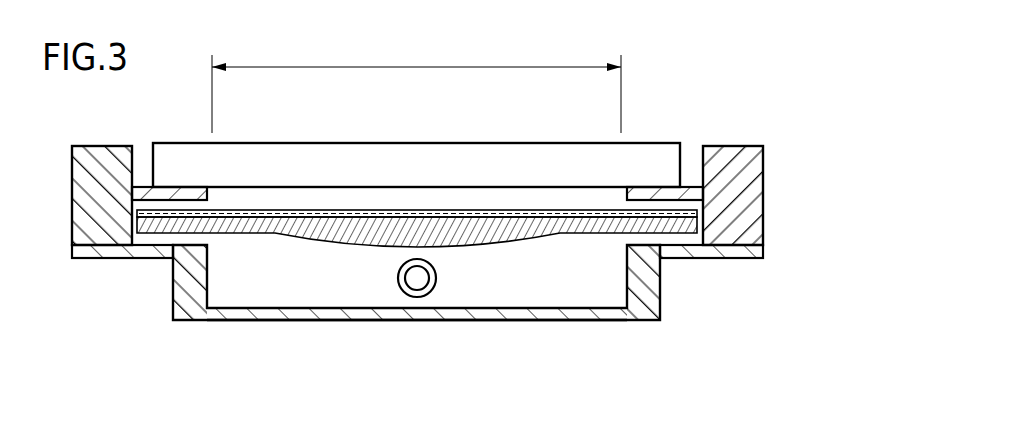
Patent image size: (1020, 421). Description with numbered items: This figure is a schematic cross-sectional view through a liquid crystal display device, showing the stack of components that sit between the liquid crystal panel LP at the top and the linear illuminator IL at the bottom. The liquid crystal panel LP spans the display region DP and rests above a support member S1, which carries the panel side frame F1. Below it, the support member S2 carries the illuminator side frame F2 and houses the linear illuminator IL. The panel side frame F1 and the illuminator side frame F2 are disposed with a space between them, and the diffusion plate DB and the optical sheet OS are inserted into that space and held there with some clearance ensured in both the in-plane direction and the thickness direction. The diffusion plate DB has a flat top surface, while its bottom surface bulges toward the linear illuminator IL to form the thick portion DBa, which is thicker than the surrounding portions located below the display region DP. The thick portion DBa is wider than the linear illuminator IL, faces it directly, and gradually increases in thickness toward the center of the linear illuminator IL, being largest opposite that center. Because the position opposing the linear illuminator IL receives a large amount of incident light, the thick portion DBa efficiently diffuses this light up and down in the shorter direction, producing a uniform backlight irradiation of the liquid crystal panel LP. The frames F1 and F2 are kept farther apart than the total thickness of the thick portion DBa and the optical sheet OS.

The liquid crystal panel LP is at (655, 153).
The display region DP is at (416, 88).
The support member S1 is at (101, 146).
The panel side frame F1 is at (166, 193).
The illuminator side frame F2 is at (203, 255).
The optical sheet OS is at (123, 250).
The diffusion plate DB is at (158, 250).
The support member S2 is at (638, 322).
The thick portion DBa is at (378, 234).
The linear illuminator IL is at (410, 297).